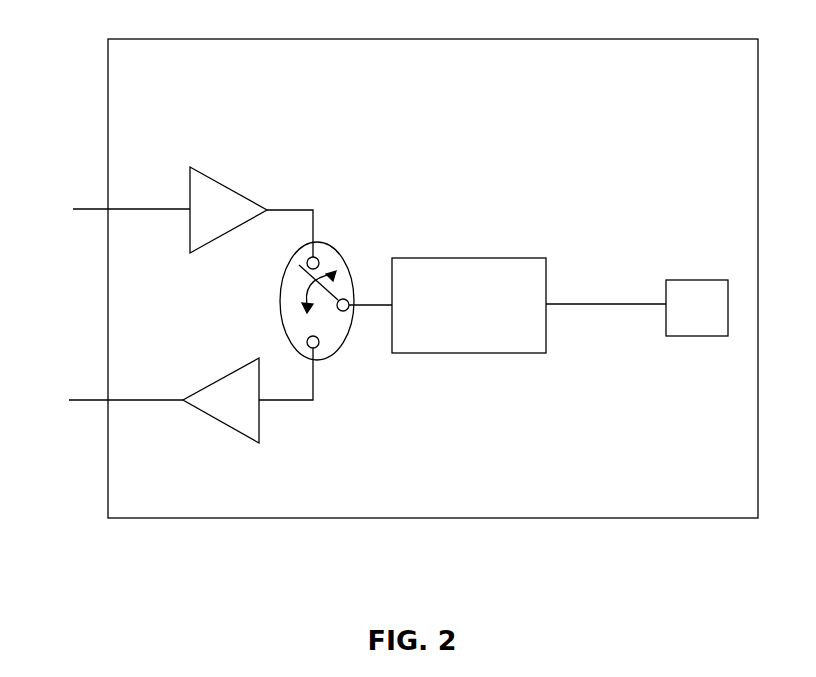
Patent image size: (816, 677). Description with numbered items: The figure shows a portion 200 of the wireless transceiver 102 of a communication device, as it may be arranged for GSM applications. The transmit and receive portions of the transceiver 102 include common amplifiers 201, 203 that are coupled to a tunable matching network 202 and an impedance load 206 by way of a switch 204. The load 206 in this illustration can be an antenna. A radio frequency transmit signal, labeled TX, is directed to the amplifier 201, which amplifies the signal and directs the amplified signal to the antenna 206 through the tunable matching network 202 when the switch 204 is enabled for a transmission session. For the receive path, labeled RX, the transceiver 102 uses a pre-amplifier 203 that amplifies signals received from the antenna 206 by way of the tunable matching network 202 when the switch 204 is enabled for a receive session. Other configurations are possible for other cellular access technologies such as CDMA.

The RF front-end circuit 200 is at (397, 321).
The wireless transceiver 102 is at (699, 505).
The amplifier 201 is at (216, 178).
The pre-amplifier 203 is at (232, 428).
The switch 204 is at (342, 252).
The tunable matching network 202 is at (469, 305).
The impedance load 206 is at (695, 278).